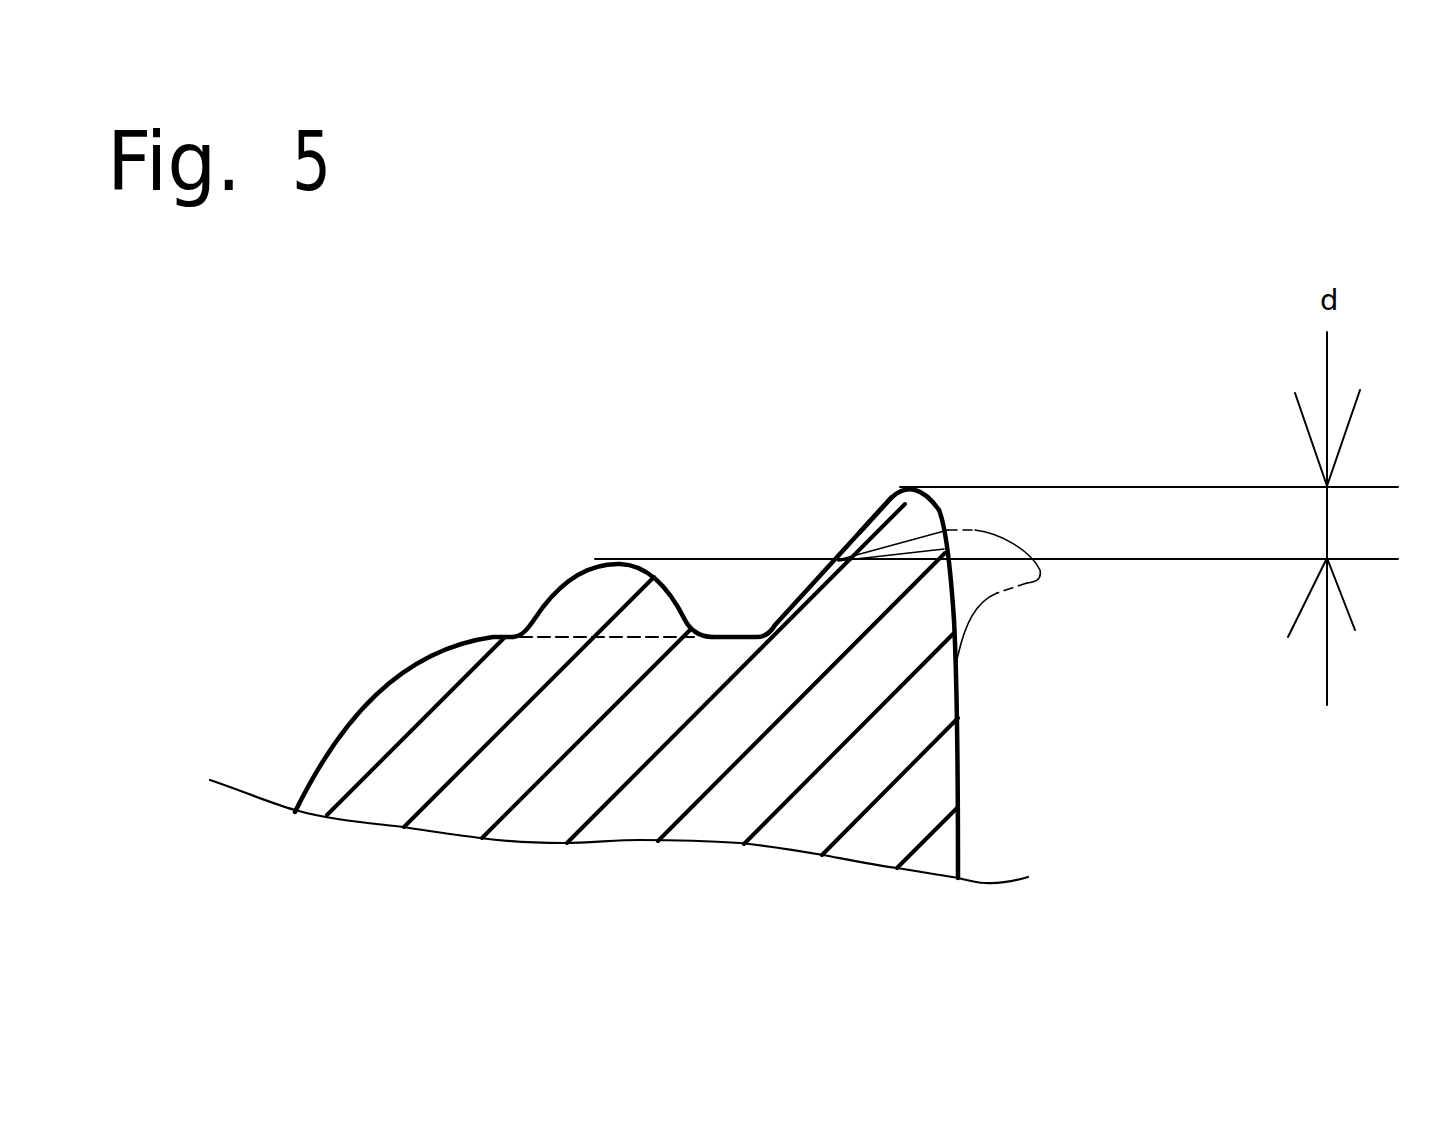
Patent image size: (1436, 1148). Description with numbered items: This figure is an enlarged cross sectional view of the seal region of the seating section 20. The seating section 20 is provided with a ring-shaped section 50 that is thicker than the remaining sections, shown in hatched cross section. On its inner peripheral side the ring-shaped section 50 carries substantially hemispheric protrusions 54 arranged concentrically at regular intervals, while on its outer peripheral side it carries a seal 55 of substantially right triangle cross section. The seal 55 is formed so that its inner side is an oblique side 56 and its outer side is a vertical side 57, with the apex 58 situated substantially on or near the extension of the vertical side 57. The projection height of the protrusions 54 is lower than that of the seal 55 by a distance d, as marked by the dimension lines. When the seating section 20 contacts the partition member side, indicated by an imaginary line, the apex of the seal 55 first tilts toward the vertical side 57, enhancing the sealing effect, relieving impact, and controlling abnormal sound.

The seating section 20 is at (397, 503).
The ring-shaped section 50 is at (800, 838).
The protrusions 54 is at (580, 592).
The seal 55 is at (904, 511).
The oblique side 56 is at (870, 525).
The vertical side 57 is at (950, 530).
The apex 58 is at (908, 490).